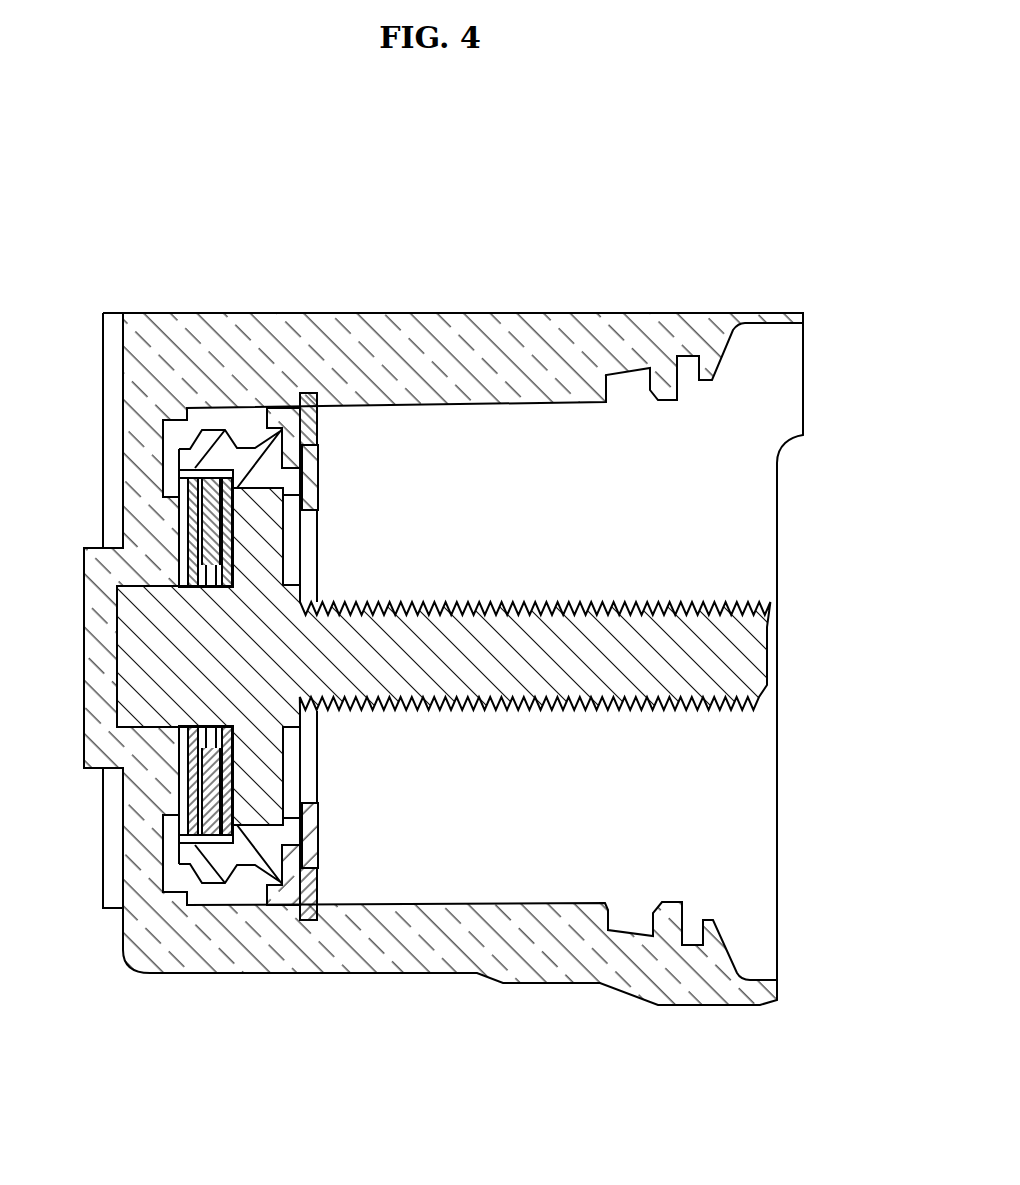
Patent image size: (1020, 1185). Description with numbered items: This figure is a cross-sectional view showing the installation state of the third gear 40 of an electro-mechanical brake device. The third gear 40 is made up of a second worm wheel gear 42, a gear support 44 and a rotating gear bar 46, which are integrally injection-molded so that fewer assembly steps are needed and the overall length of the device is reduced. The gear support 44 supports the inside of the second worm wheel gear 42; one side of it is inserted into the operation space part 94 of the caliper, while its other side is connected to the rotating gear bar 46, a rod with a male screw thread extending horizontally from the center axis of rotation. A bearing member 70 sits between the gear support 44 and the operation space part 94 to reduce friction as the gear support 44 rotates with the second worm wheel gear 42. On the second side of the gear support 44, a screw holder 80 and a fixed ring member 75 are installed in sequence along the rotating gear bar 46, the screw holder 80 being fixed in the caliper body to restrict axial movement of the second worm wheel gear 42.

The third gear 40 is at (302, 249).
The second worm wheel gear 42 is at (250, 462).
The gear support 44 is at (252, 640).
The rotating gear bar 46 is at (453, 627).
The bearing member 70 is at (193, 523).
The fixed ring member 75 is at (306, 913).
The screw holder 80 is at (345, 834).
The operation space part 94 is at (548, 1008).